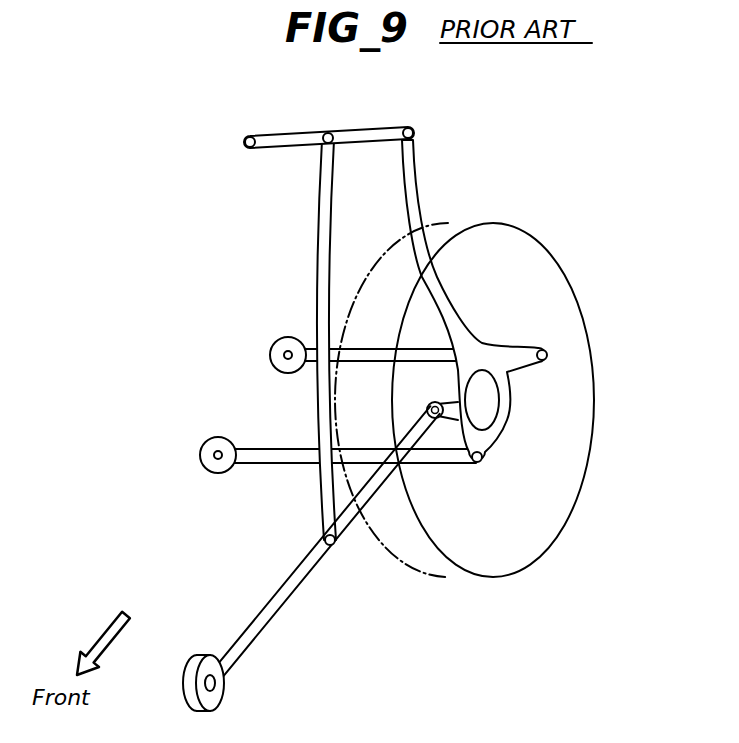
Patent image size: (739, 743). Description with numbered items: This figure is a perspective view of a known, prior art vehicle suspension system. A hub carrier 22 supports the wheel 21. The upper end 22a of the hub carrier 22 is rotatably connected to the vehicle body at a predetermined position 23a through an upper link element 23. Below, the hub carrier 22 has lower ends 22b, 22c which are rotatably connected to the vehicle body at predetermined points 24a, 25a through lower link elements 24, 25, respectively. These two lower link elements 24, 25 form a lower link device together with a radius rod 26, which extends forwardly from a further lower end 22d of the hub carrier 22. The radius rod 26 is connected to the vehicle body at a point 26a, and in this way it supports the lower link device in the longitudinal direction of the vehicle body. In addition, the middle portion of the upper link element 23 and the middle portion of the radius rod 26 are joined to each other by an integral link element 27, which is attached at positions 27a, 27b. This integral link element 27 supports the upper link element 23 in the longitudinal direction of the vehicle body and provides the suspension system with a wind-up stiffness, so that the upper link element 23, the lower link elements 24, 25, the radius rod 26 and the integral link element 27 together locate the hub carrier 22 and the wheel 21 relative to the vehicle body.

The wheel 21 is at (594, 423).
The hub carrier 22 is at (442, 279).
The upper end of hub carrier 22a is at (412, 129).
The lower end of hub carrier 22b is at (480, 465).
The lower end of hub carrier 22c is at (548, 353).
The lower end of hub carrier 22d is at (432, 406).
The upper link element 23 is at (372, 128).
The predetermined position 23a is at (249, 137).
The lower link element 24 is at (284, 464).
The predetermined point 24a is at (216, 452).
The lower link element 25 is at (363, 348).
The predetermined point 25a is at (283, 352).
The radius rod 26 is at (256, 614).
The connection point 26a is at (215, 685).
The integral link element 27 is at (318, 236).
The connection position 27a is at (328, 133).
The connection position 27b is at (334, 548).